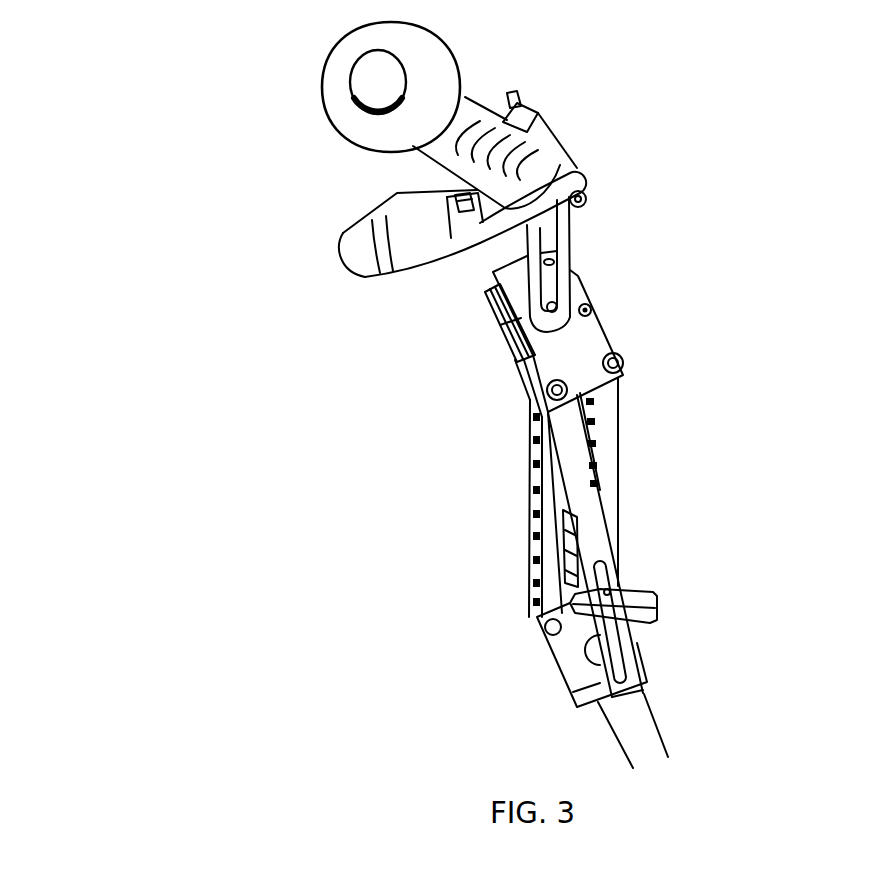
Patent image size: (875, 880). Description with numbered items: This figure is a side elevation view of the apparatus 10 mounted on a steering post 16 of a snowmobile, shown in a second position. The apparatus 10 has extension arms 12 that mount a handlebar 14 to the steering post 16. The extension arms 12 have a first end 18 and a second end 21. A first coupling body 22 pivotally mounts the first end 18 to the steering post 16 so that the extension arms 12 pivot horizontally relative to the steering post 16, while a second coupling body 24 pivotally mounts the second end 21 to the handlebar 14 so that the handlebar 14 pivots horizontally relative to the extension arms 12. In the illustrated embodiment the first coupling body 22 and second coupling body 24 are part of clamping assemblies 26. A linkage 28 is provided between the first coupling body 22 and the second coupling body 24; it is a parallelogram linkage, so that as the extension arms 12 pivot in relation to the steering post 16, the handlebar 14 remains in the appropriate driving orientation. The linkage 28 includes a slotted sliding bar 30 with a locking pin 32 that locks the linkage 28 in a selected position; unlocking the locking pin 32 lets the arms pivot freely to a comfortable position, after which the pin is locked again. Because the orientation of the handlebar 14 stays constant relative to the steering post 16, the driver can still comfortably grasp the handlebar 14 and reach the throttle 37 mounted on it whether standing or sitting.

The apparatus 10 is at (300, 344).
The extension arms 12 is at (617, 442).
The handlebar 14 is at (465, 98).
The steering post 16 is at (657, 730).
The first end 18 is at (537, 617).
The second end 21 is at (598, 389).
The first coupling body 22 is at (557, 662).
The second coupling body 24 is at (502, 342).
The clamping assemblies 26 is at (483, 298).
The linkage 28 is at (642, 570).
The slotted sliding bar 30 is at (598, 493).
The locking pin 32 is at (657, 607).
The throttle 37 is at (340, 250).